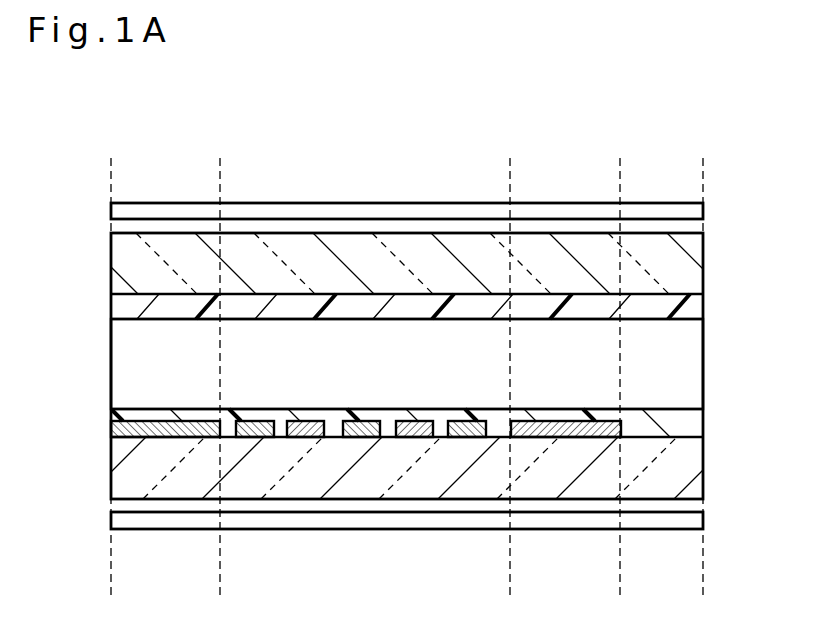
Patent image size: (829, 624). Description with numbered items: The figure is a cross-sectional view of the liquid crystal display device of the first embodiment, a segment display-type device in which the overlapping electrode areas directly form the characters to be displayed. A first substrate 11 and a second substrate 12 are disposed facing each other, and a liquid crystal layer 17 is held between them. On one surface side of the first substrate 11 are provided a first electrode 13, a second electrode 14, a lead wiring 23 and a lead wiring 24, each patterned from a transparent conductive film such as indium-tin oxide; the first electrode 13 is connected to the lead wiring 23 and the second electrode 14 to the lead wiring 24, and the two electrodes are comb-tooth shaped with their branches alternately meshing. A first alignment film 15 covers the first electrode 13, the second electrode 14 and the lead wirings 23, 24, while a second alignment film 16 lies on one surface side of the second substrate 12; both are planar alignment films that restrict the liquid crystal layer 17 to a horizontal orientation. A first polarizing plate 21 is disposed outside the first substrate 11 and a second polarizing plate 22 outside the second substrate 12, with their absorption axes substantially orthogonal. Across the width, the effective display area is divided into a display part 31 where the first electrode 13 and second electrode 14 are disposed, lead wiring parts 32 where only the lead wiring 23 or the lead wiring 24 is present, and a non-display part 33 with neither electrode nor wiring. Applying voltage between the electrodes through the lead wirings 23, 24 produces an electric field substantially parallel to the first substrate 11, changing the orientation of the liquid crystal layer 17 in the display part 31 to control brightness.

The first substrate 11 is at (703, 472).
The second substrate 12 is at (703, 272).
The first electrode 13 is at (255, 439).
The second electrode 14 is at (303, 439).
The first alignment film 15 is at (703, 428).
The second alignment film 16 is at (703, 311).
The liquid crystal layer 17 is at (703, 366).
The first polarizing plate 21 is at (703, 522).
The second polarizing plate 22 is at (703, 211).
The lead wiring 23 is at (179, 439).
The lead wiring 24 is at (563, 439).
The display part 31 is at (220, 160).
The lead wiring part 32 is at (111, 160).
The non-display part 33 is at (620, 160).